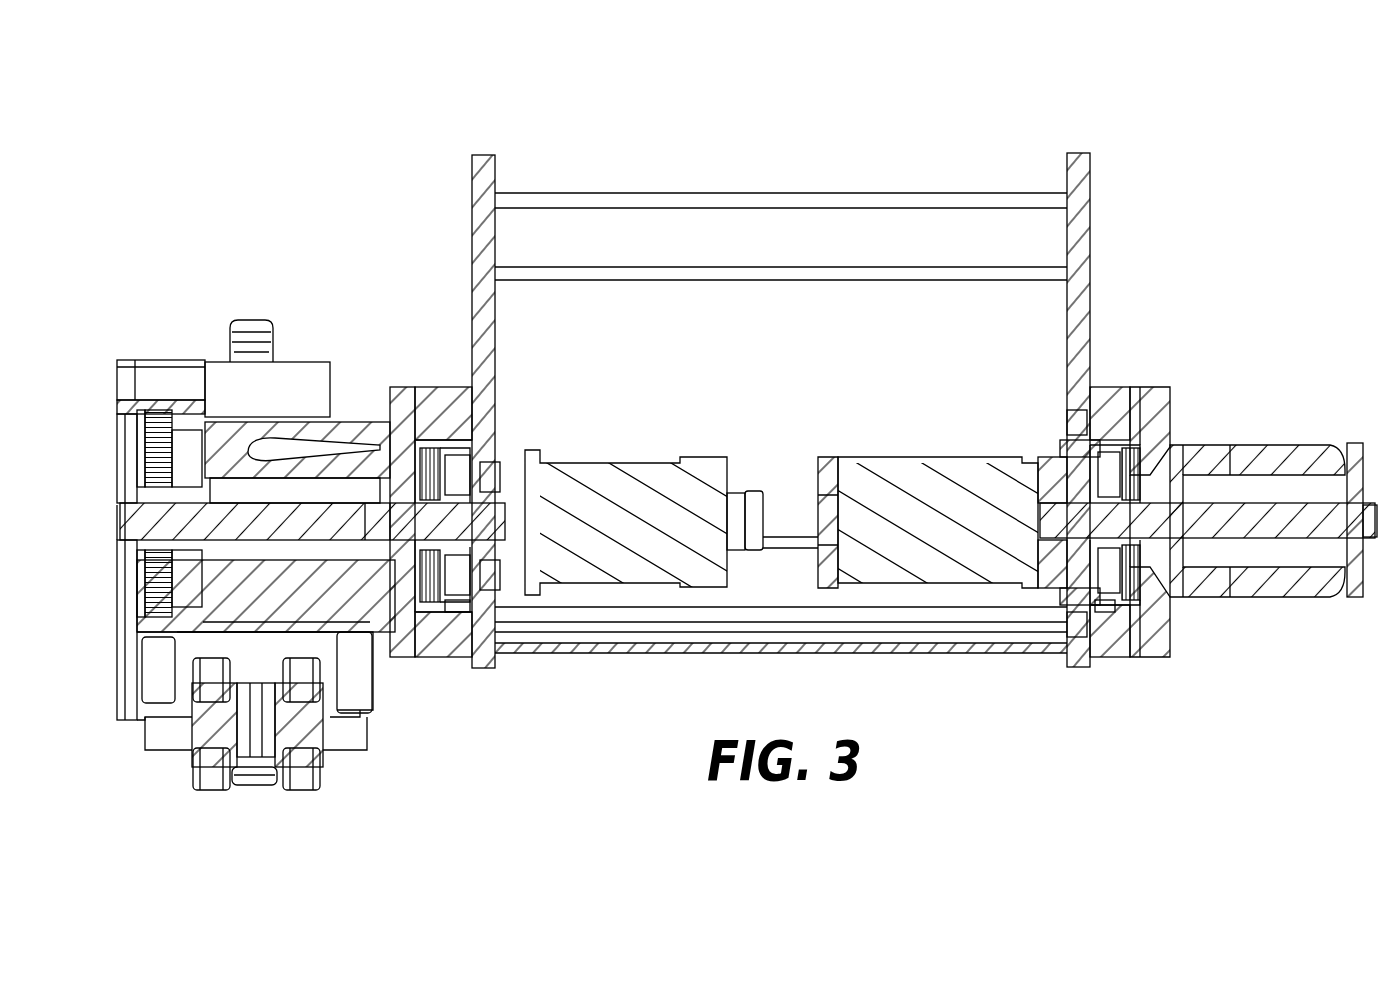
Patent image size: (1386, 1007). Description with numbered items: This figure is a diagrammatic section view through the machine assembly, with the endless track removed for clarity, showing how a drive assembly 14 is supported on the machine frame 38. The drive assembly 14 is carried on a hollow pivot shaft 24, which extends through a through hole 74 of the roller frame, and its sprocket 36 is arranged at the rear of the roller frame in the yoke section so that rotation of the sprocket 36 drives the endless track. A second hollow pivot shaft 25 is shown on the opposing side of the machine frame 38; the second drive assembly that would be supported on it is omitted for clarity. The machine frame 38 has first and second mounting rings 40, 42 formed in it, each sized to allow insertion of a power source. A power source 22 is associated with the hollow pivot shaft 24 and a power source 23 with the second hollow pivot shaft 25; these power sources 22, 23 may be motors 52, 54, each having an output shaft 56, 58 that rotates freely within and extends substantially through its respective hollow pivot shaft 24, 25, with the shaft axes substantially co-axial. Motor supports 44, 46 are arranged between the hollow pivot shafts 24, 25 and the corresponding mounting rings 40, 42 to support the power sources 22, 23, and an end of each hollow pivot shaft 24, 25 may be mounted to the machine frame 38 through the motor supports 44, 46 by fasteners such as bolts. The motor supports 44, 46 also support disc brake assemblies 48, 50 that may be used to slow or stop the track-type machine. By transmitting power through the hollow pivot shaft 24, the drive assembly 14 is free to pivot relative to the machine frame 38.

The drive assembly 14 is at (167, 340).
The sprocket 36 is at (253, 318).
The through hole 74 is at (305, 440).
The output shaft 56 is at (357, 510).
The hollow pivot shaft 24 is at (398, 395).
The motor support 44 is at (427, 395).
The first mounting ring 40 is at (458, 395).
The machine frame 38 is at (1097, 168).
The power source 22 is at (580, 452).
The motor 52 is at (700, 460).
The motor 54 is at (850, 460).
The power source 23 is at (960, 452).
The second mounting ring 42 is at (1112, 390).
The motor support 46 is at (1143, 388).
The second hollow pivot shaft 25 is at (1163, 395).
The output shaft 58 is at (1263, 503).
The disc brake assembly 48 is at (458, 614).
The disc brake assembly 50 is at (1100, 614).